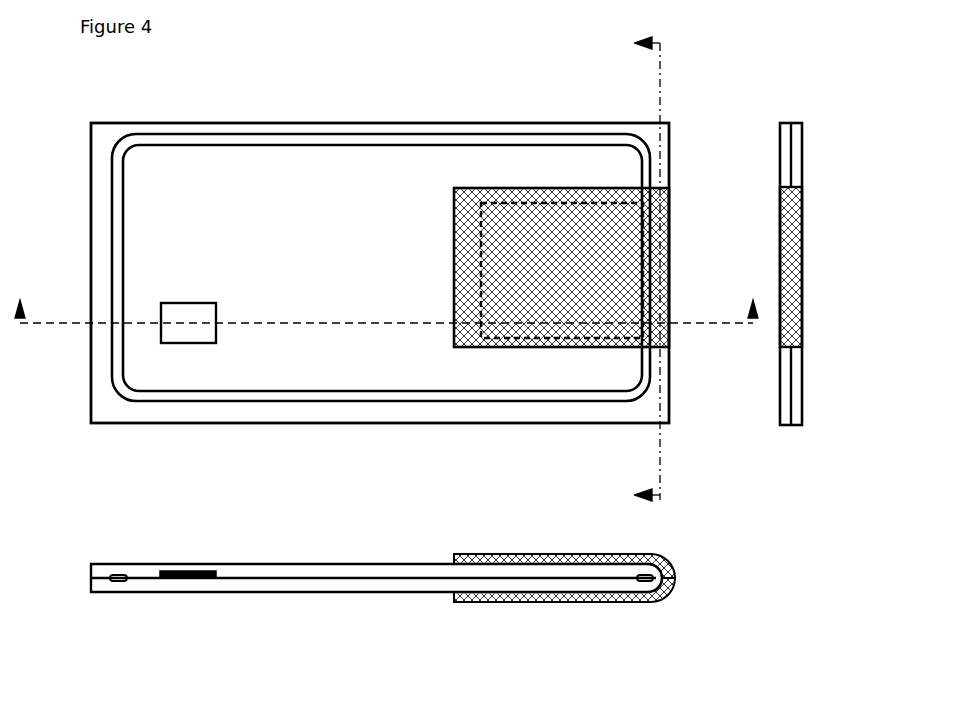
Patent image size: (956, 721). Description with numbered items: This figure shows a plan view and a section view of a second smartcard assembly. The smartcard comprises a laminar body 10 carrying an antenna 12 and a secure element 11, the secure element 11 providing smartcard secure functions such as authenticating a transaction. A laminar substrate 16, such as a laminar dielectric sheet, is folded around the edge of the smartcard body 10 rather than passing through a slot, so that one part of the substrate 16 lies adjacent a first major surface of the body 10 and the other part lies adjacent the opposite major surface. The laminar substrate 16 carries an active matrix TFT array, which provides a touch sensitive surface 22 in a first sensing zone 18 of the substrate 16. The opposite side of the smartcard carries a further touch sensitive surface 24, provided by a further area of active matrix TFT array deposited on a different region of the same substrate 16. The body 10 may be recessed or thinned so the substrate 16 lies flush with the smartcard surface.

The laminar body 10 is at (342, 123).
The secure element 11 is at (198, 343).
The antenna 12 is at (135, 402).
The laminar substrate 16 is at (513, 188).
The first sensing zone 18 is at (597, 202).
The touch sensitive surface 22 is at (577, 553).
The further touch sensitive surface 24 is at (593, 602).